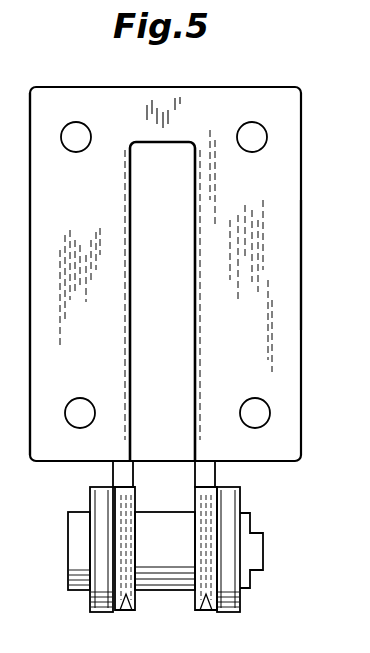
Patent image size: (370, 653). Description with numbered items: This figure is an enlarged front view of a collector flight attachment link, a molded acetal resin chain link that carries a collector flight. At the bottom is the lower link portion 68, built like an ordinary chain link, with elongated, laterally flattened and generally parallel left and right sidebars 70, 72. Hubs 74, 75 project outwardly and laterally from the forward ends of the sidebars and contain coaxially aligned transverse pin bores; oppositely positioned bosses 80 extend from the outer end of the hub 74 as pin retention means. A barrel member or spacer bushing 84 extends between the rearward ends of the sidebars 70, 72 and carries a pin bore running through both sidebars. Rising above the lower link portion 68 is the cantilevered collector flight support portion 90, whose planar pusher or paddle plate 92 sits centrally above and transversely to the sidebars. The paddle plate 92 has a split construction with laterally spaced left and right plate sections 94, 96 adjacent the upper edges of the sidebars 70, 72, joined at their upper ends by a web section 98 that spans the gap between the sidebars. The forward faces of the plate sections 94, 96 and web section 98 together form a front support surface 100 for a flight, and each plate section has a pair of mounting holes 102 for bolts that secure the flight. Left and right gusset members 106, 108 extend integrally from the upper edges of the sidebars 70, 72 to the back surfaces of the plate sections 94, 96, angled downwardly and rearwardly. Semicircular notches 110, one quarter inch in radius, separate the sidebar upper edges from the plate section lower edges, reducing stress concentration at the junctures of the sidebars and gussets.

The lower link portion 68 is at (161, 596).
The left sidebar 70 is at (198, 600).
The right sidebar 72 is at (129, 606).
The hub 74 is at (243, 516).
The hub 75 is at (71, 520).
The bosses 80 is at (259, 546).
The barrel member or spacer bushing 84 is at (170, 512).
The collector flight support portion 90 is at (305, 241).
The paddle plate 92 is at (275, 82).
The left plate section 94 is at (279, 187).
The right plate section 96 is at (57, 443).
The web section 98 is at (186, 96).
The front support surface 100 is at (276, 265).
The mounting holes 102 is at (80, 128).
The left gusset member 106 is at (214, 474).
The right gusset member 108 is at (118, 472).
The notches 110 is at (193, 464).